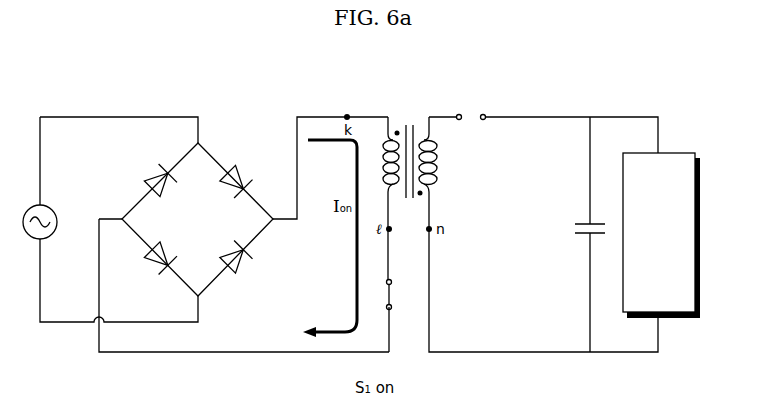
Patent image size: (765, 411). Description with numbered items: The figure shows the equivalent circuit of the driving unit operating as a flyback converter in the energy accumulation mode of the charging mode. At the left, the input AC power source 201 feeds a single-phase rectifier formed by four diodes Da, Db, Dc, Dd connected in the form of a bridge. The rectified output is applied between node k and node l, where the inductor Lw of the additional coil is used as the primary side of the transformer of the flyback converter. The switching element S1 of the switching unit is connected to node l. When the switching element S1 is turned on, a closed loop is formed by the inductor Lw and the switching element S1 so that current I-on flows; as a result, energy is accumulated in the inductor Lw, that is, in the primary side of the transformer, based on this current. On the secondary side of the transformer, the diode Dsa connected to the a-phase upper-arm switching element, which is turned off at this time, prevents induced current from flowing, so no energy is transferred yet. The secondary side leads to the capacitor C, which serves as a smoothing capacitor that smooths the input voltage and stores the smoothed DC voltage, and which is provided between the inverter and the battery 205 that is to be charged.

The input AC power source 201 is at (47, 207).
The battery 205 is at (680, 153).
The diode Da is at (245, 182).
The diode Db is at (245, 257).
The diode Dc is at (151, 181).
The diode Dd is at (151, 258).
The inductor of the additional coil Lw is at (381, 199).
The switching element S1 is at (379, 316).
The diode Dsa is at (509, 126).
The capacitor C is at (590, 234).